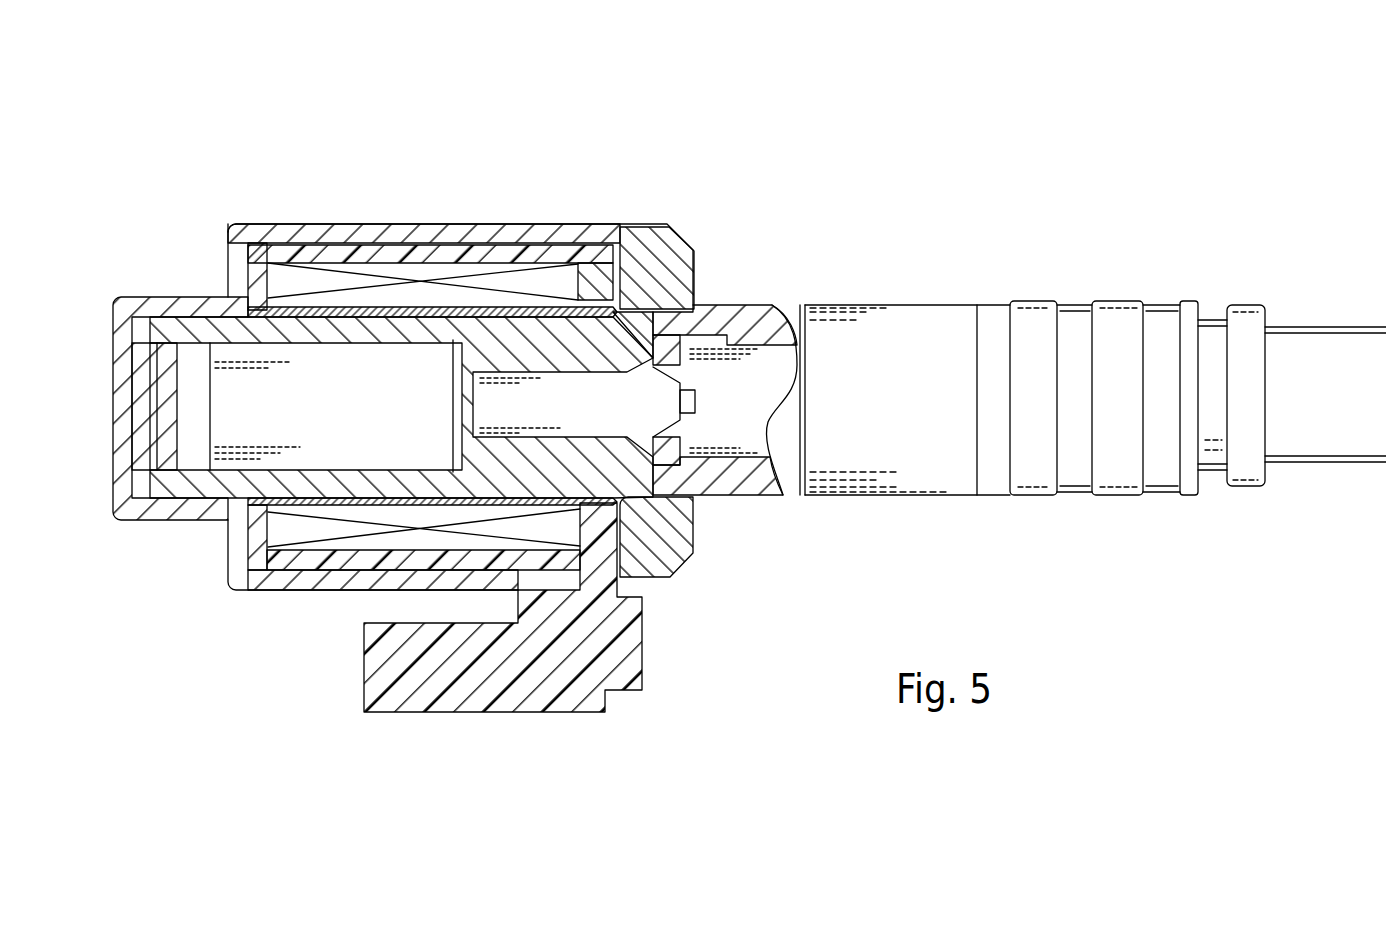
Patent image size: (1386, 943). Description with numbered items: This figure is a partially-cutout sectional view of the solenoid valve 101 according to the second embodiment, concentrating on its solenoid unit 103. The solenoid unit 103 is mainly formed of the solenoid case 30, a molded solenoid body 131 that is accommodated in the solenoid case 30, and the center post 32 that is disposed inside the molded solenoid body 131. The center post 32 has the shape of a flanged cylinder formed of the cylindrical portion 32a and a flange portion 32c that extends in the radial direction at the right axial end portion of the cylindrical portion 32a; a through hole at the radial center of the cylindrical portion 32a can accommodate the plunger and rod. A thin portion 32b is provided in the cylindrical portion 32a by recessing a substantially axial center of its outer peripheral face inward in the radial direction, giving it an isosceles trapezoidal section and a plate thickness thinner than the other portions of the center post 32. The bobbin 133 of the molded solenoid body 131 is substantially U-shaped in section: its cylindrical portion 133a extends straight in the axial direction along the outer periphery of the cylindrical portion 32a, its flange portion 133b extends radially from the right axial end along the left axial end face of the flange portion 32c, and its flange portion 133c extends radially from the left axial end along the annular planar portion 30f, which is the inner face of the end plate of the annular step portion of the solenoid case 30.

The solenoid valve 101 is at (980, 140).
The solenoid unit 103 is at (218, 153).
The solenoid case 30 is at (255, 215).
The annular planar portion 30f is at (243, 279).
The center post 32 is at (701, 274).
The cylindrical portion 32a is at (177, 519).
The thin portion 32b is at (418, 478).
The flange portion 32c is at (640, 262).
The molded solenoid body 131 is at (652, 652).
The bobbin 133 is at (228, 555).
The cylindrical portion 133a is at (385, 305).
The flange portion 133b is at (632, 275).
The flange portion 133c is at (243, 263).